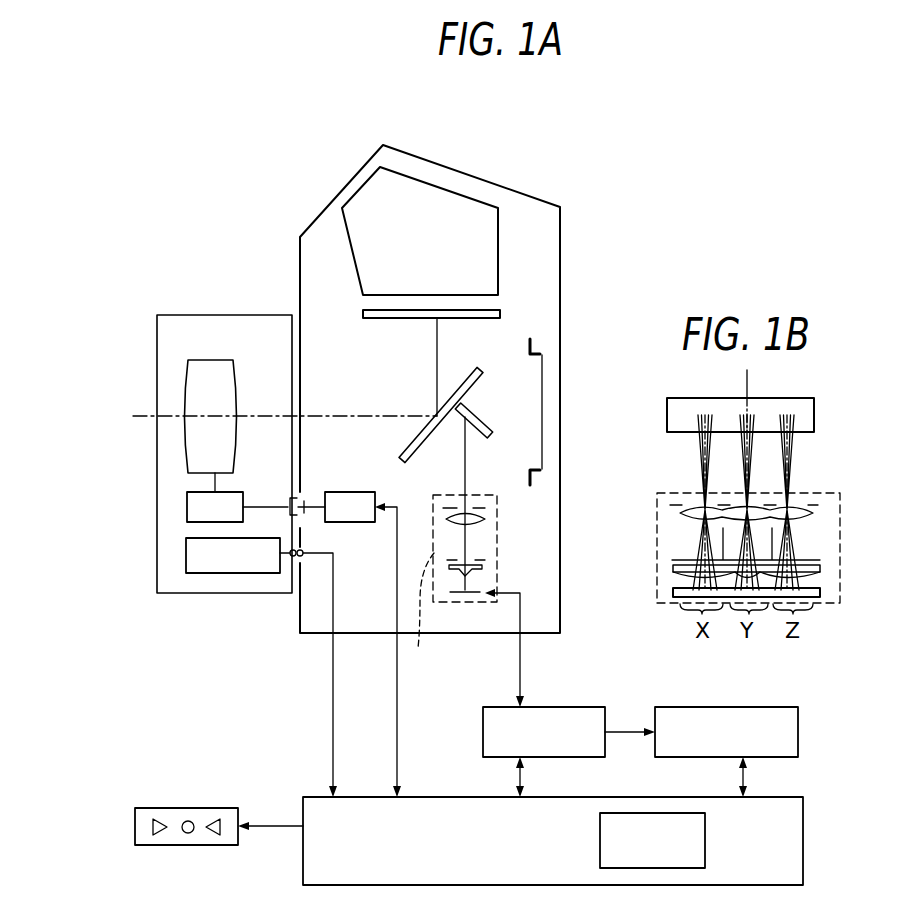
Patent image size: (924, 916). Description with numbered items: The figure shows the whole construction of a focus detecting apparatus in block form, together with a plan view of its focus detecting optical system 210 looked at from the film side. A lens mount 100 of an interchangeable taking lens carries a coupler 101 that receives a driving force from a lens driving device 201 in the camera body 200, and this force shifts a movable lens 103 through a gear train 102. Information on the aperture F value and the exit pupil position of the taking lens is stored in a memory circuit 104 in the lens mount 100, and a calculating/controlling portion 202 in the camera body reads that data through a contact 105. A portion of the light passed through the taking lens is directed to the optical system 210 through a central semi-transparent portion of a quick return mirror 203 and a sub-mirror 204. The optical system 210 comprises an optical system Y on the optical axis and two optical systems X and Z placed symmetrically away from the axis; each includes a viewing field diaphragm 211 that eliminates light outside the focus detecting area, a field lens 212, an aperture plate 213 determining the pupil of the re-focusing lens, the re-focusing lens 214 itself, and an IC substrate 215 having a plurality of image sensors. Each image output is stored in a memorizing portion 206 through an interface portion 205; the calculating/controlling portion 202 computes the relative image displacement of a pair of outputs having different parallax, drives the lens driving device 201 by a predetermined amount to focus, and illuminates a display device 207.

In FIG. 1A, the lens mount 100 is at (192, 315).
In FIG. 1A, the coupler 101 is at (263, 505).
In FIG. 1A, the gear train 102 is at (187, 500).
In FIG. 1A, the movable lens 103 is at (186, 380).
In FIG. 1A, the memory circuit 104 is at (186, 552).
In FIG. 1A, the contact 105 is at (293, 556).
In FIG. 1A, the camera body 200 is at (535, 198).
In FIG. 1A, the lens driving device 201 is at (340, 492).
In FIG. 1A, the calculating/controlling portion 202 is at (305, 797).
In FIG. 1A, the quick return mirror 203 is at (418, 448).
In FIG. 1A, the sub-mirror 204 is at (487, 426).
In FIG. 1B, the sub-mirror 204 is at (814, 415).
In FIG. 1A, the interface portion 205 is at (588, 706).
In FIG. 1A, the memorizing portion 206 is at (740, 706).
In FIG. 1A, the display device 207 is at (212, 808).
In FIG. 1A, the focus detecting optical system 210 is at (423, 615).
In FIG. 1A, the viewing field diaphragm 211 is at (490, 511).
In FIG. 1B, the viewing field diaphragm 211 is at (818, 503).
In FIG. 1A, the field lens 212 is at (484, 522).
In FIG. 1B, the field lens 212 is at (818, 510).
In FIG. 1A, the aperture plate 213 is at (482, 560).
In FIG. 1B, the aperture plate 213 is at (818, 558).
In FIG. 1A, the re-focusing lens 214 is at (480, 574).
In FIG. 1B, the re-focusing lens 214 is at (820, 572).
In FIG. 1A, the IC substrate 215 is at (474, 596).
In FIG. 1B, the IC substrate 215 is at (820, 594).